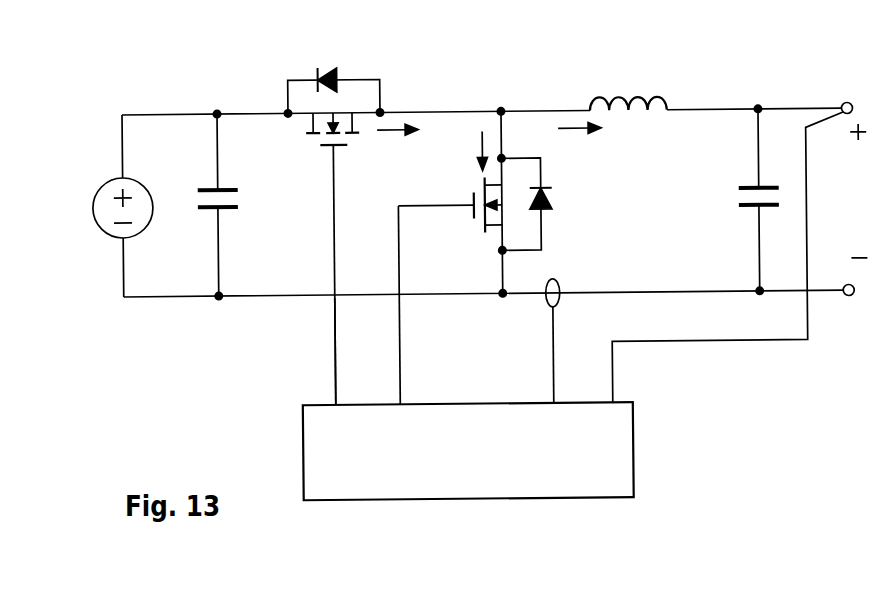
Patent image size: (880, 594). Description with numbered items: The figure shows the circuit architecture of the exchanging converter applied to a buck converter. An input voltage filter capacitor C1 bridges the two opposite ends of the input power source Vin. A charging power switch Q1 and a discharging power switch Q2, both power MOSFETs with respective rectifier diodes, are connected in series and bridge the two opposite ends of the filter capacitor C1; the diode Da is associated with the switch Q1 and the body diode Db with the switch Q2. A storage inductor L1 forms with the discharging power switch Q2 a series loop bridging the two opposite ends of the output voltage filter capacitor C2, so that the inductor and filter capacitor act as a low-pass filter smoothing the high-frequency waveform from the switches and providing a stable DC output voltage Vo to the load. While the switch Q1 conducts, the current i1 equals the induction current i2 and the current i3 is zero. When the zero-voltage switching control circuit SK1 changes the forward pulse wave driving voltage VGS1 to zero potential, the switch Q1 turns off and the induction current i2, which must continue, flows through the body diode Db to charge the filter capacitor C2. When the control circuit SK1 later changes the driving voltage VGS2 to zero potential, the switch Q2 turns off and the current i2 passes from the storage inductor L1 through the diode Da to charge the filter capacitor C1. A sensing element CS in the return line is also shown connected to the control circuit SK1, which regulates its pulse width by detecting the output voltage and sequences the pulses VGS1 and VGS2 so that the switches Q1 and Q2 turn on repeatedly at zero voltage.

The input power source Vin is at (98, 208).
The input voltage filter capacitor C1 is at (242, 204).
The diode Da is at (333, 70).
The charging power switch Q1 is at (323, 259).
The current i1 is at (398, 151).
The induction current i2 is at (580, 149).
The current i3 is at (464, 153).
The discharging power switch Q2 is at (449, 202).
The body diode Db is at (556, 203).
The storage inductor L1 is at (627, 83).
The output voltage filter capacitor C2 is at (734, 200).
The DC output voltage Vo is at (865, 191).
The current sensor CS is at (536, 341).
The forward pulse wave driving voltage VGS1 is at (360, 350).
The driving voltage VGS2 is at (424, 304).
The zero-voltage switching control circuit SK1 is at (469, 483).